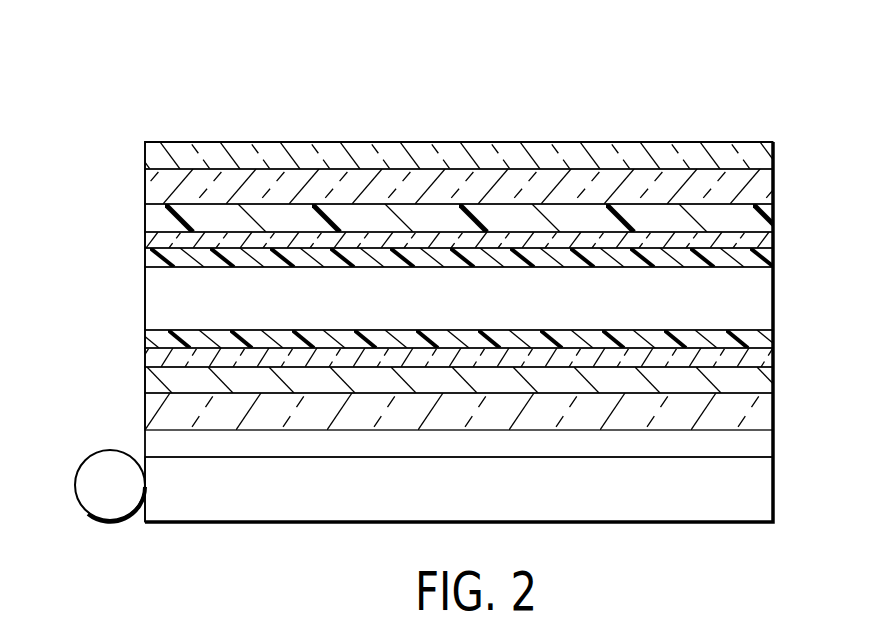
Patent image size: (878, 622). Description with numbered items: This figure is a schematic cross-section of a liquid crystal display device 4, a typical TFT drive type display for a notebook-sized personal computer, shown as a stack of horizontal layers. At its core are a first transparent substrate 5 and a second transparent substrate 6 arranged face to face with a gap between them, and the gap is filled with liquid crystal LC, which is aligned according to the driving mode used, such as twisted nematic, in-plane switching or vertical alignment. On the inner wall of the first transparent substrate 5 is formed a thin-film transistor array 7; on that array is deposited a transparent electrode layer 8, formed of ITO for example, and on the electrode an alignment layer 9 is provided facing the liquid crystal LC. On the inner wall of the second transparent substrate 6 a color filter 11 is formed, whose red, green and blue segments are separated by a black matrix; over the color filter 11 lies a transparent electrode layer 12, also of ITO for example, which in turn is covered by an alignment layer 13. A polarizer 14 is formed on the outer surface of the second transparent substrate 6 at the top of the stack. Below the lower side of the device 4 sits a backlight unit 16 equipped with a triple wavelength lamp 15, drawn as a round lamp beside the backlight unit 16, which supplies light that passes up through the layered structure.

The liquid crystal display device 4 is at (605, 100).
The first transparent substrate 5 is at (163, 413).
The second transparent substrate 6 is at (163, 187).
The thin-film transistor (TFT) array 7 is at (753, 383).
The transparent electrode layer 8 is at (160, 355).
The alignment layer 9 is at (757, 342).
The liquid crystal LC is at (163, 305).
The color filter 11 is at (762, 218).
The transparent electrode layer 12 is at (160, 245).
The alignment layer 13 is at (767, 258).
The polarizer 14 is at (753, 158).
The triple wavelength lamp 15 is at (75, 490).
The backlight unit 16 is at (755, 487).